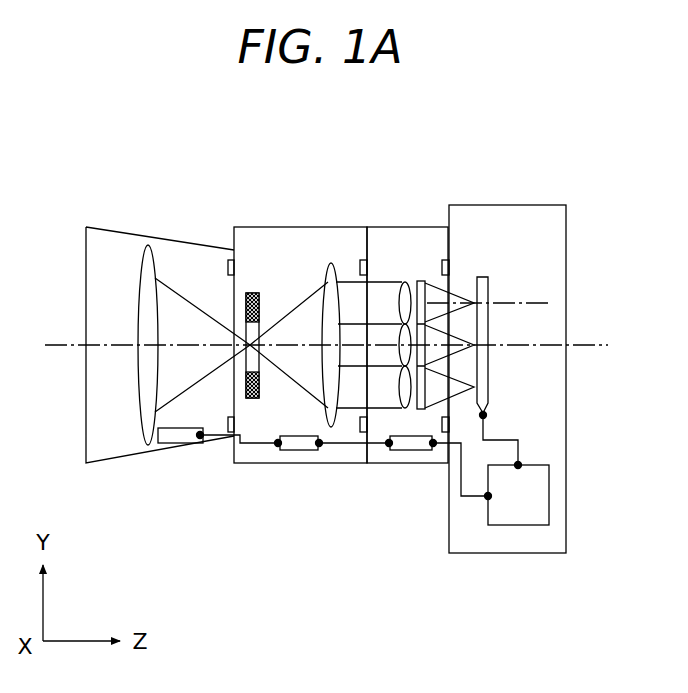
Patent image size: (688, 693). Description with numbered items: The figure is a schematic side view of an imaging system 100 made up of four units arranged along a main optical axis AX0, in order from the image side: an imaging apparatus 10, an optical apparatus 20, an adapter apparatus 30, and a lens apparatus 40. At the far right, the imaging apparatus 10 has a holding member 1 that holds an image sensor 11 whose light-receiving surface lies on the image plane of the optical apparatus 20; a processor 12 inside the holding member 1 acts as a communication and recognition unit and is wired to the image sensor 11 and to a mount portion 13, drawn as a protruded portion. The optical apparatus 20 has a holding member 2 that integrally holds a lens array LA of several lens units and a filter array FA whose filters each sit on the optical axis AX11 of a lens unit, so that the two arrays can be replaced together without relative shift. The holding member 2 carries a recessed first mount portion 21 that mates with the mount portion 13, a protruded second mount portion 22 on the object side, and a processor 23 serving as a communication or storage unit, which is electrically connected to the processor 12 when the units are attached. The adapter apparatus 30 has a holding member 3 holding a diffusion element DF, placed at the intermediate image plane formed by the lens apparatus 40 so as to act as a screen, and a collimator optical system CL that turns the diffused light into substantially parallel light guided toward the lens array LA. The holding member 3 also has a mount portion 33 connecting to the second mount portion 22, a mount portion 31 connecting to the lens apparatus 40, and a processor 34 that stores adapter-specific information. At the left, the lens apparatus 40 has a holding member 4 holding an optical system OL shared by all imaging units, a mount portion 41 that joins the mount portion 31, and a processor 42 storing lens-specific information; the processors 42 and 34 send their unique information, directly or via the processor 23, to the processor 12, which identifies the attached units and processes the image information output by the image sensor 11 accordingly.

The imaging system 100 is at (302, 633).
The imaging apparatus 10 is at (528, 355).
The holding member 1 is at (545, 205).
The image sensor 11 is at (480, 277).
The processor 12 is at (517, 513).
The mount portion 13 is at (445, 432).
The optical axis of lens unit AX11 is at (543, 300).
The optical apparatus 20 is at (427, 355).
The holding member 2 is at (443, 227).
The lens array LA is at (403, 283).
The filter array FA is at (419, 280).
The first mount portion 21 is at (415, 416).
The second mount portion 22 is at (362, 432).
The processor 23 is at (410, 450).
The adapter apparatus 30 is at (317, 320).
The holding member 3 is at (257, 227).
The diffusion element DF is at (255, 293).
The optical system CL is at (331, 263).
The mount portion 31 is at (232, 438).
The mount portion 33 is at (355, 395).
The processor 34 is at (298, 450).
The lens apparatus 40 is at (206, 334).
The holding member 4 is at (100, 227).
The optical system OL is at (148, 245).
The mount portion 41 is at (222, 395).
The processor 42 is at (172, 443).
The optical axis AX0 is at (58, 345).